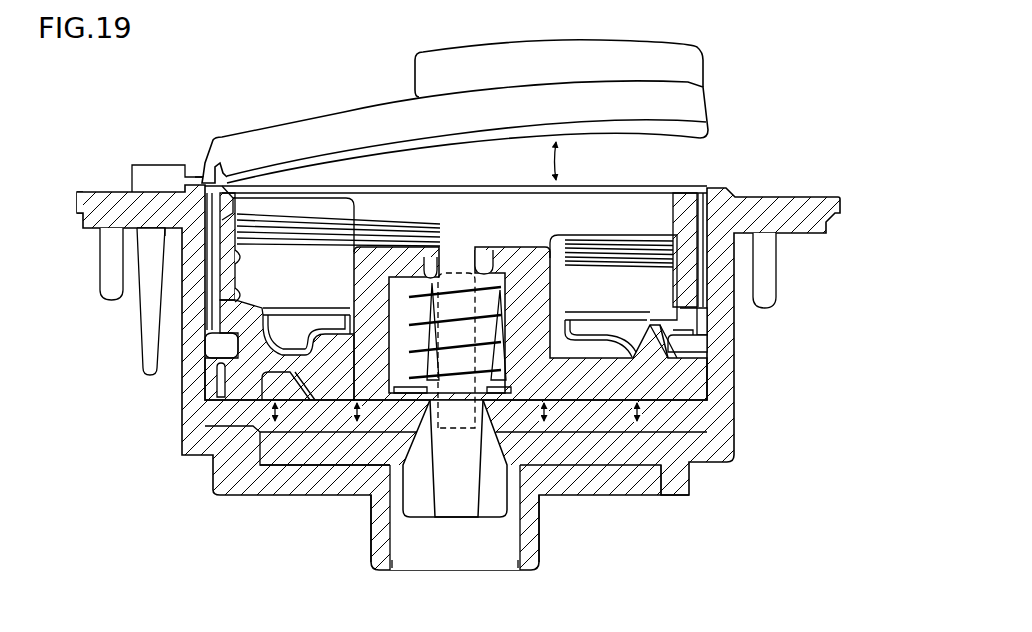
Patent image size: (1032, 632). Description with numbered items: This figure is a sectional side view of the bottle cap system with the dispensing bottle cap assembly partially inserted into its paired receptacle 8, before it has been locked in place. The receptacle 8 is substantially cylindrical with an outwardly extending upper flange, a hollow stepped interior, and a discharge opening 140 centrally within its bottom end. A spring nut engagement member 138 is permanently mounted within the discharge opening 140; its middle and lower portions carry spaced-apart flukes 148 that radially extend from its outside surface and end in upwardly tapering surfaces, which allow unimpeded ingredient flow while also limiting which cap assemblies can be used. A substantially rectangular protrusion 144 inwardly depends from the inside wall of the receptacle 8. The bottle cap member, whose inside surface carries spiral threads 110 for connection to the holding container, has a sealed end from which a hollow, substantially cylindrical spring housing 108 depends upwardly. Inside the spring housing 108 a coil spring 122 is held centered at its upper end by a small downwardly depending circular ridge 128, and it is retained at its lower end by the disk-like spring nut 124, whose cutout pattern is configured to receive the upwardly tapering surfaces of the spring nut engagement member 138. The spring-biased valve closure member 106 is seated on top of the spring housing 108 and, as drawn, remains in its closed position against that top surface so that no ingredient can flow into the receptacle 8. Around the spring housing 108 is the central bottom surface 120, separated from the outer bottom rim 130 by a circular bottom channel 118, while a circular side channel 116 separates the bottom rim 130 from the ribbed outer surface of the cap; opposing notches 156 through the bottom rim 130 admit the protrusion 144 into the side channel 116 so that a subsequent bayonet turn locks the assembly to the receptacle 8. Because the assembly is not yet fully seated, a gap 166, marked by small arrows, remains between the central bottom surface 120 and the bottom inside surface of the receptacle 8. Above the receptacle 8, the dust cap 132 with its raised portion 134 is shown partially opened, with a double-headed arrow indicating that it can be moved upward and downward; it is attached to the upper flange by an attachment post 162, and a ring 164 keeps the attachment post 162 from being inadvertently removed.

The receptacle 8 is at (100, 188).
The valve closure member 106 is at (553, 240).
The spring housing 108 is at (380, 315).
The spiral threads 110 is at (345, 205).
The side channel 116 is at (701, 346).
The bottom channel 118 is at (212, 455).
The central bottom surface 120 is at (661, 497).
The spring 122 is at (305, 495).
The spring nut 124 is at (506, 418).
The circular ridge 128 is at (426, 268).
The bottom rim 130 is at (675, 385).
The dust cap 132 is at (398, 118).
The raised portion 134 is at (586, 57).
The spring nut engagement member 138 is at (372, 560).
The discharge opening 140 is at (489, 552).
The protrusion 144 is at (688, 352).
The flukes 148 is at (496, 493).
The notches 156 is at (132, 230).
The attachment post 162 is at (148, 343).
The ring 164 is at (110, 277).
The gap 166 is at (253, 492).